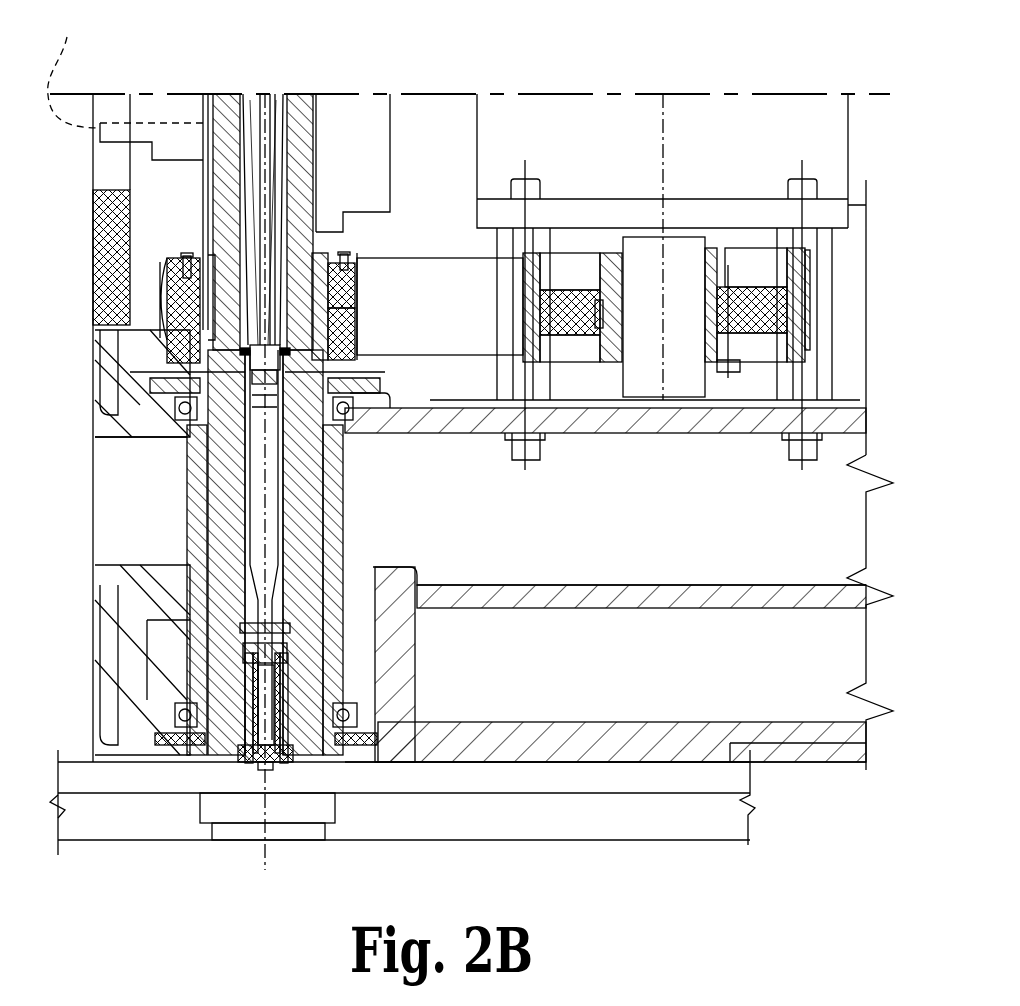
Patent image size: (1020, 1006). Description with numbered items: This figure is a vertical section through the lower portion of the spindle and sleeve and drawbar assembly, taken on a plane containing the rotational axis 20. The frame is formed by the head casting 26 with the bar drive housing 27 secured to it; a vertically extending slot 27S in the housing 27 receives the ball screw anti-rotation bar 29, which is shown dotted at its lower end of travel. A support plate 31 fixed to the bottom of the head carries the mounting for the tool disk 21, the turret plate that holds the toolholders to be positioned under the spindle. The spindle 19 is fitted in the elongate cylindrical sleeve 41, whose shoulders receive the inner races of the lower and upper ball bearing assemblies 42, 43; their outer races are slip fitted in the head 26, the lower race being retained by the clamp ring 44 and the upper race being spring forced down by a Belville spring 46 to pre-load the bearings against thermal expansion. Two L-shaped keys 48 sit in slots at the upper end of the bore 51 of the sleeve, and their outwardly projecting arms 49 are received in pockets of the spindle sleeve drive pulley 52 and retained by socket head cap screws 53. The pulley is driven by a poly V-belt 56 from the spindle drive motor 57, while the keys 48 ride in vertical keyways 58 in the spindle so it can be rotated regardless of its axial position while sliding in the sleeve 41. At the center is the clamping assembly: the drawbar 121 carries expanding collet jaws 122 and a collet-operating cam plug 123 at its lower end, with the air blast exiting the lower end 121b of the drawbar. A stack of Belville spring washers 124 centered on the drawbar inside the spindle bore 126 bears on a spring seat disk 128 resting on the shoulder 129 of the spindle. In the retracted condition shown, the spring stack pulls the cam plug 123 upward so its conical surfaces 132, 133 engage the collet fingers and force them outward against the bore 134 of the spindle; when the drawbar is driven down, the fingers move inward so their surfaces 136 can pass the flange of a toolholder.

The spindle 19 is at (222, 192).
The axis 20 is at (265, 858).
The tool disk 21 is at (740, 822).
The head casting 26 is at (110, 404).
The bar drive housing 27 is at (96, 240).
The slot 27S is at (108, 164).
The anti-rotation bar 29 is at (74, 67).
The support plate 31 is at (740, 778).
The sleeve 41 is at (192, 455).
The lower ball bearing assembly 42 is at (350, 420).
The upper ball bearing assembly 43 is at (395, 712).
The clamp ring 44 is at (400, 740).
The Belville spring 46 is at (358, 415).
The L-shaped keys 48 is at (328, 280).
The arms 49 is at (187, 270).
The bore 51 is at (340, 310).
The spindle sleeve drive pulley 52 is at (340, 336).
The socket head cap screws 53 is at (185, 262).
The poly V-belt 56 is at (457, 355).
The spindle drive motor 57 is at (480, 120).
The keyways 58 is at (207, 228).
The drawbar 121 is at (272, 163).
The lower end of the drawbar 121b is at (262, 770).
The collet jaws 122 is at (248, 700).
The cam plug 123 is at (240, 757).
The Belville spring washers 124 is at (243, 163).
The spindle bore 126 is at (238, 118).
The spring seat disk 128 is at (200, 345).
The shoulder 129 is at (340, 378).
The conical surface 132 is at (245, 648).
The conical surface 133 is at (258, 725).
The bore 134 is at (305, 698).
The surfaces 136 is at (350, 755).